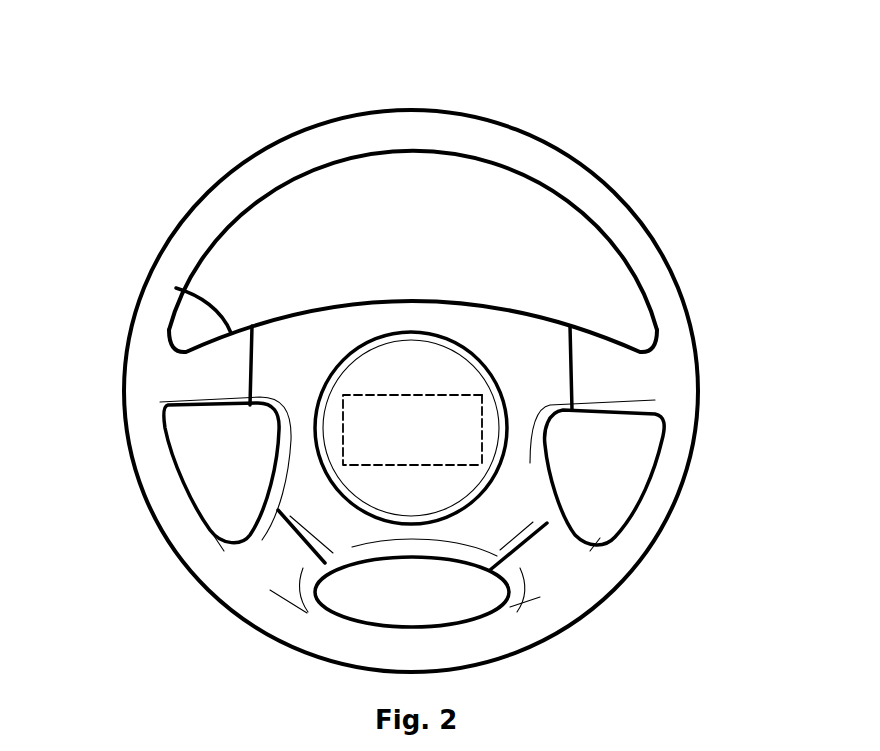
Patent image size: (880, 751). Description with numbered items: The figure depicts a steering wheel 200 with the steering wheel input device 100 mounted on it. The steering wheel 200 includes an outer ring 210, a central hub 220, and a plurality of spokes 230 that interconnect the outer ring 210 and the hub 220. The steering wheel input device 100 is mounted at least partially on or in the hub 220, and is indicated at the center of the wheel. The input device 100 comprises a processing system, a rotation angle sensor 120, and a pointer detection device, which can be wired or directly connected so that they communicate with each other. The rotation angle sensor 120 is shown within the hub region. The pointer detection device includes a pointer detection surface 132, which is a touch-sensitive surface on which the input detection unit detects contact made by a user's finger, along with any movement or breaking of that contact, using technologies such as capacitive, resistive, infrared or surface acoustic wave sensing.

The steering wheel input device 100 is at (345, 338).
The rotation angle sensor 120 is at (463, 393).
The pointer detection surface 132 is at (482, 393).
The steering wheel 200 is at (724, 338).
The outer ring 210 is at (535, 137).
The hub 220 is at (394, 302).
The spokes 230 is at (200, 296).